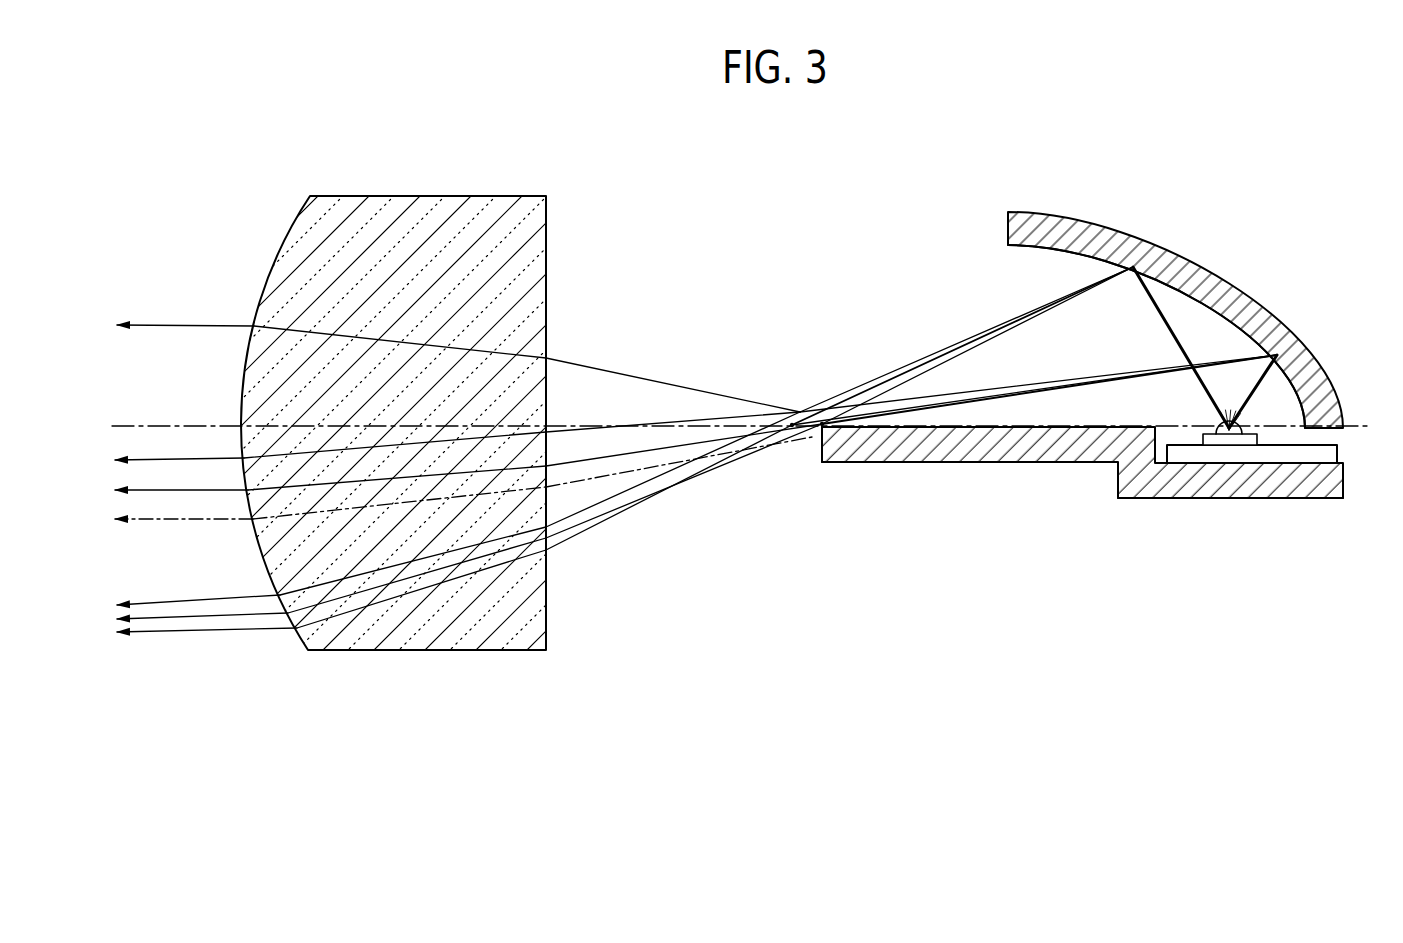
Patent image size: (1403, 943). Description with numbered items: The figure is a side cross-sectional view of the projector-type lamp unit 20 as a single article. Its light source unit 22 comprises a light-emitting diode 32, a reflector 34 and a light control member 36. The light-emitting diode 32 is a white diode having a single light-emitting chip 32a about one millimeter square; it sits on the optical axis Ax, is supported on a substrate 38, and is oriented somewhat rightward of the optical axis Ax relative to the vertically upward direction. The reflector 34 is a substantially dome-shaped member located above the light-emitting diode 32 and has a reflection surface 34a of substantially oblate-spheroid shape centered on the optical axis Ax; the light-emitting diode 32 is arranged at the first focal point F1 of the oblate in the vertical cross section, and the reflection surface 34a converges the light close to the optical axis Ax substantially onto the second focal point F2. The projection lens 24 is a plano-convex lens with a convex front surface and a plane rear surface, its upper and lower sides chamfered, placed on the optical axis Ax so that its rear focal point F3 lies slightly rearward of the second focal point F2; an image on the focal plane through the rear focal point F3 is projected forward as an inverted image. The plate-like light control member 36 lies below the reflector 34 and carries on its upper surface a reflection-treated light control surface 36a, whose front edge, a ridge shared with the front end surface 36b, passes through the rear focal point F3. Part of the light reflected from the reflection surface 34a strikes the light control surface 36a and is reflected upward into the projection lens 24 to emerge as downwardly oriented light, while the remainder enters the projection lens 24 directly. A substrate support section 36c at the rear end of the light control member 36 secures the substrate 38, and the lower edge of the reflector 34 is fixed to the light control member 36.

The lamp unit 20 is at (1049, 148).
The light source unit 22 is at (852, 225).
The projection lens 24 is at (302, 210).
The light-emitting diode 32 is at (1249, 339).
The light-emitting chip 32a is at (1247, 424).
The reflector 34 is at (1175, 294).
The reflection surface 34a is at (1198, 290).
The light control member 36 is at (1030, 454).
The light control surface 36a is at (826, 428).
The front end surface 36b is at (818, 445).
The substrate support section 36c is at (1216, 492).
The substrate 38 is at (1268, 466).
The first focal point F1 is at (1232, 420).
The second focal point F2 is at (792, 422).
The rear focal point F3 is at (823, 422).
The optical axis Ax is at (180, 424).